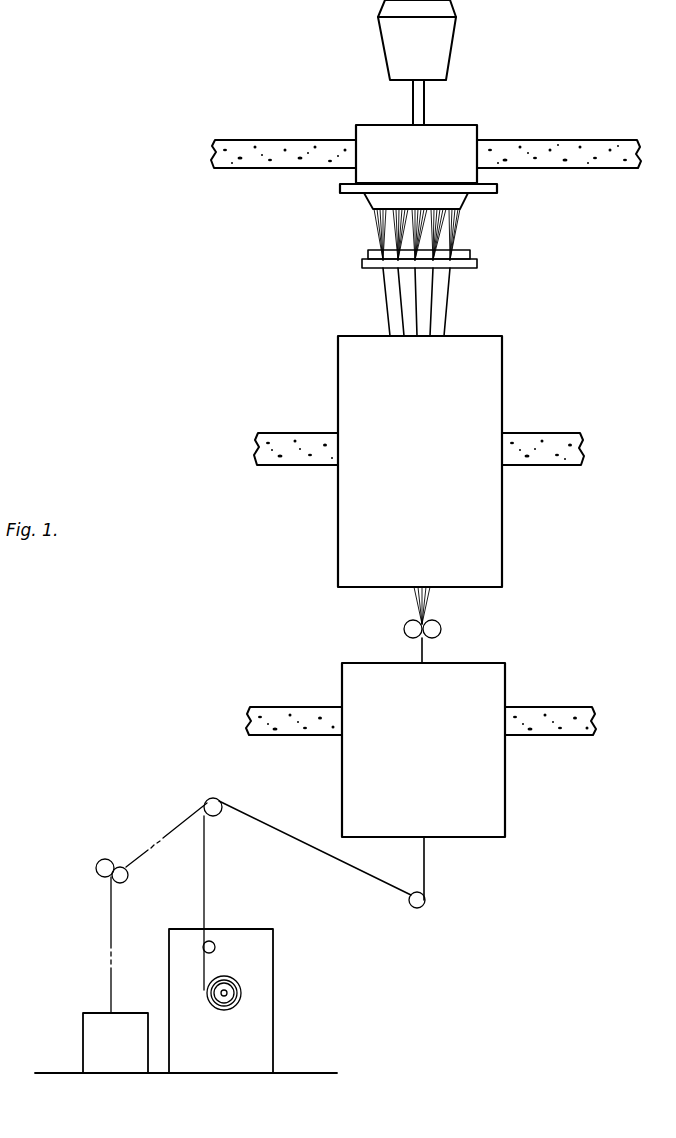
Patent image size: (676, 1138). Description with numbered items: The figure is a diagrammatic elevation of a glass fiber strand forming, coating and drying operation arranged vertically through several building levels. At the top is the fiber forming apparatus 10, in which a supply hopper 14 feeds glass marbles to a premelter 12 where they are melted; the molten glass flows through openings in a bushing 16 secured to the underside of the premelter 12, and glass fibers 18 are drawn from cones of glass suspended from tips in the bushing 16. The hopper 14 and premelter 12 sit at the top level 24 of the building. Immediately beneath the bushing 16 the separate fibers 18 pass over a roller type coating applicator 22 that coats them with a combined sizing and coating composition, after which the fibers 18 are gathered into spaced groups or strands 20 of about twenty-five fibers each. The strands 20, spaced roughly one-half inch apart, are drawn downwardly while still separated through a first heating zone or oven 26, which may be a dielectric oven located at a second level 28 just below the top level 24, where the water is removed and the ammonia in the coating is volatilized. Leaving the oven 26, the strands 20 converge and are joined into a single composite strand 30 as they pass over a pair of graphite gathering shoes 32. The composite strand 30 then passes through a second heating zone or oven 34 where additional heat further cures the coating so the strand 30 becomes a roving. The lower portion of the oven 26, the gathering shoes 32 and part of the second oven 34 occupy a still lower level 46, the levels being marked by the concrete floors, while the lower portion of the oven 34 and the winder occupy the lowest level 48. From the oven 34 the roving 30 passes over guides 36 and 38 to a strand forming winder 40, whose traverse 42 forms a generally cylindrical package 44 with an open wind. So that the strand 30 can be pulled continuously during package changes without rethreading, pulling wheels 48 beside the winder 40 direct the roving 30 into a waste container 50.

The fiber forming apparatus 10 is at (522, 180).
The premelter 12 is at (477, 124).
The supply hopper 14 is at (448, 48).
The bushing 16 is at (462, 201).
The glass fibers 18 is at (374, 229).
The strands 20 is at (405, 278).
The roller type coating applicator 22 is at (495, 258).
The top level 24 is at (612, 126).
The first heating zone or oven 26 is at (429, 374).
The second level 28 is at (588, 419).
The composite strand 30 is at (426, 648).
The graphite gathering shoes 32 is at (406, 623).
The second heating zone or oven 34 is at (434, 701).
The guide 36 is at (425, 902).
The guide 38 is at (216, 799).
The strand forming winder 40 is at (288, 1010).
The traverse 42 is at (213, 941).
The package 44 is at (242, 990).
The still lower level 46 is at (608, 693).
The pulling wheels 48 is at (98, 862).
The waste container 50 is at (84, 1028).